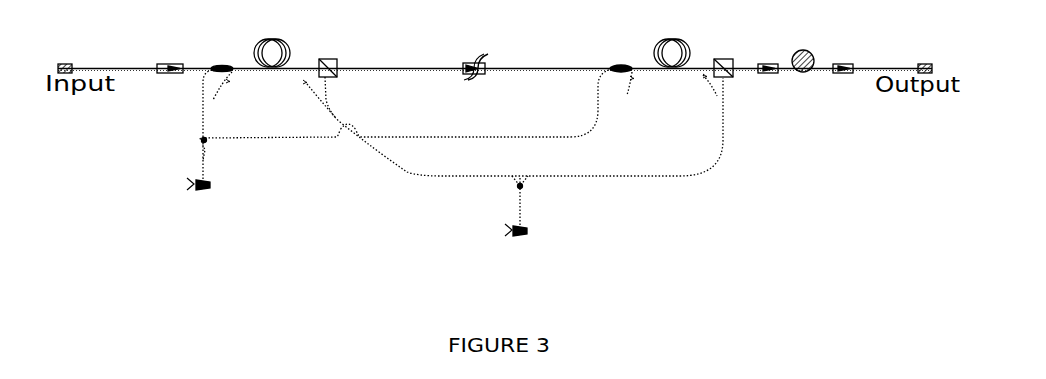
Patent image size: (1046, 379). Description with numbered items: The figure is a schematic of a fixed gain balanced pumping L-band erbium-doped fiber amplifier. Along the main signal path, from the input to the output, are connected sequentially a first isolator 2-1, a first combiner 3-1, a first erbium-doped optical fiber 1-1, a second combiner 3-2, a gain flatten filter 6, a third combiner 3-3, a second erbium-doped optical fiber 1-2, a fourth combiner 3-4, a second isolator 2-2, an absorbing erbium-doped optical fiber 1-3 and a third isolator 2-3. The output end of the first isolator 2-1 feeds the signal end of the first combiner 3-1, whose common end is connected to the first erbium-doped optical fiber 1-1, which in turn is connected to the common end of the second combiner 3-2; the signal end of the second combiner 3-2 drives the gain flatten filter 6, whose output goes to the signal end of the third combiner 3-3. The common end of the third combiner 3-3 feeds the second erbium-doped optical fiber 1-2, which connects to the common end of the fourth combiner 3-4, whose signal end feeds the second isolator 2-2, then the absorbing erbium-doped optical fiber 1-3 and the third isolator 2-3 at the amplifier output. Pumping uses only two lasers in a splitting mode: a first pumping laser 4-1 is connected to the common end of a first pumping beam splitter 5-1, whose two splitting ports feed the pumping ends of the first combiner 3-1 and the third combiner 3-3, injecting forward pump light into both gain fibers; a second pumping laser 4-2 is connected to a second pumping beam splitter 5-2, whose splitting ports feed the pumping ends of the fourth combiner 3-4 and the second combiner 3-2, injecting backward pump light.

The first erbium-doped optical fiber 1-1 is at (276, 40).
The second erbium-doped optical fiber 1-2 is at (672, 40).
The absorbing erbium-doped optical fiber 1-3 is at (806, 50).
The first isolator 2-1 is at (188, 49).
The second isolator 2-2 is at (787, 44).
The third isolator 2-3 is at (847, 66).
The first combiner 3-1 is at (237, 50).
The second combiner 3-2 is at (337, 60).
The third combiner 3-3 is at (633, 44).
The fourth combiner 3-4 is at (740, 50).
The first pumping laser 4-1 is at (209, 188).
The second pumping laser 4-2 is at (527, 236).
The first pumping beam splitter 5-1 is at (207, 143).
The second pumping beam splitter 5-2 is at (524, 190).
The gain flatten filter 6 is at (473, 58).